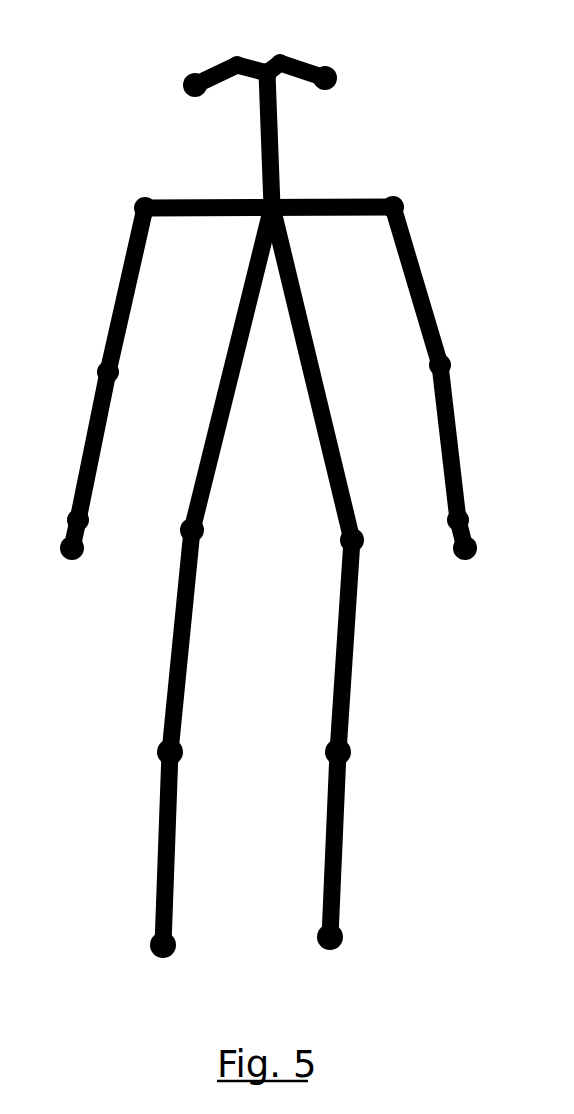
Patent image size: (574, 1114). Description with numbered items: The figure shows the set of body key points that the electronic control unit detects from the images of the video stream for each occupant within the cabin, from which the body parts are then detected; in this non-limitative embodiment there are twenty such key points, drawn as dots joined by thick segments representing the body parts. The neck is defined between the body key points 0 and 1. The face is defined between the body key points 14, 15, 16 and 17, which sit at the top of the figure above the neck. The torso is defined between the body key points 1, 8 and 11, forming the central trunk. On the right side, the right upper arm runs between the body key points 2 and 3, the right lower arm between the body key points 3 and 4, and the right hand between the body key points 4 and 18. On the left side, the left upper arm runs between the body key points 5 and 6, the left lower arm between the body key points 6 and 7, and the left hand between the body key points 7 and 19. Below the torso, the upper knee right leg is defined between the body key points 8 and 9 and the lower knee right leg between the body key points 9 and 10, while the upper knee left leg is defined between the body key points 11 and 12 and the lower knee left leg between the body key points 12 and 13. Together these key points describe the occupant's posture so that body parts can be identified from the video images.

The body key point K0 0 is at (280, 97).
The body key point K1 1 is at (288, 225).
The body key point K2 2 is at (146, 191).
The body key point K3 3 is at (91, 375).
The body key point K4 4 is at (58, 519).
The body key point K5 5 is at (395, 191).
The body key point K6 6 is at (454, 364).
The body key point K7 7 is at (475, 520).
The body key point K8 8 is at (175, 529).
The body key point K9 9 is at (153, 745).
The body key point K10 10 is at (144, 949).
The body key point K11 11 is at (373, 534).
The body key point K12 12 is at (360, 745).
The body key point K13 13 is at (350, 933).
The body key point K14 14 is at (236, 46).
The body key point K15 15 is at (283, 45).
The body key point K16 16 is at (172, 90).
The body key point K17 17 is at (341, 79).
The body key point K18 18 is at (56, 561).
The body key point K19 19 is at (488, 559).